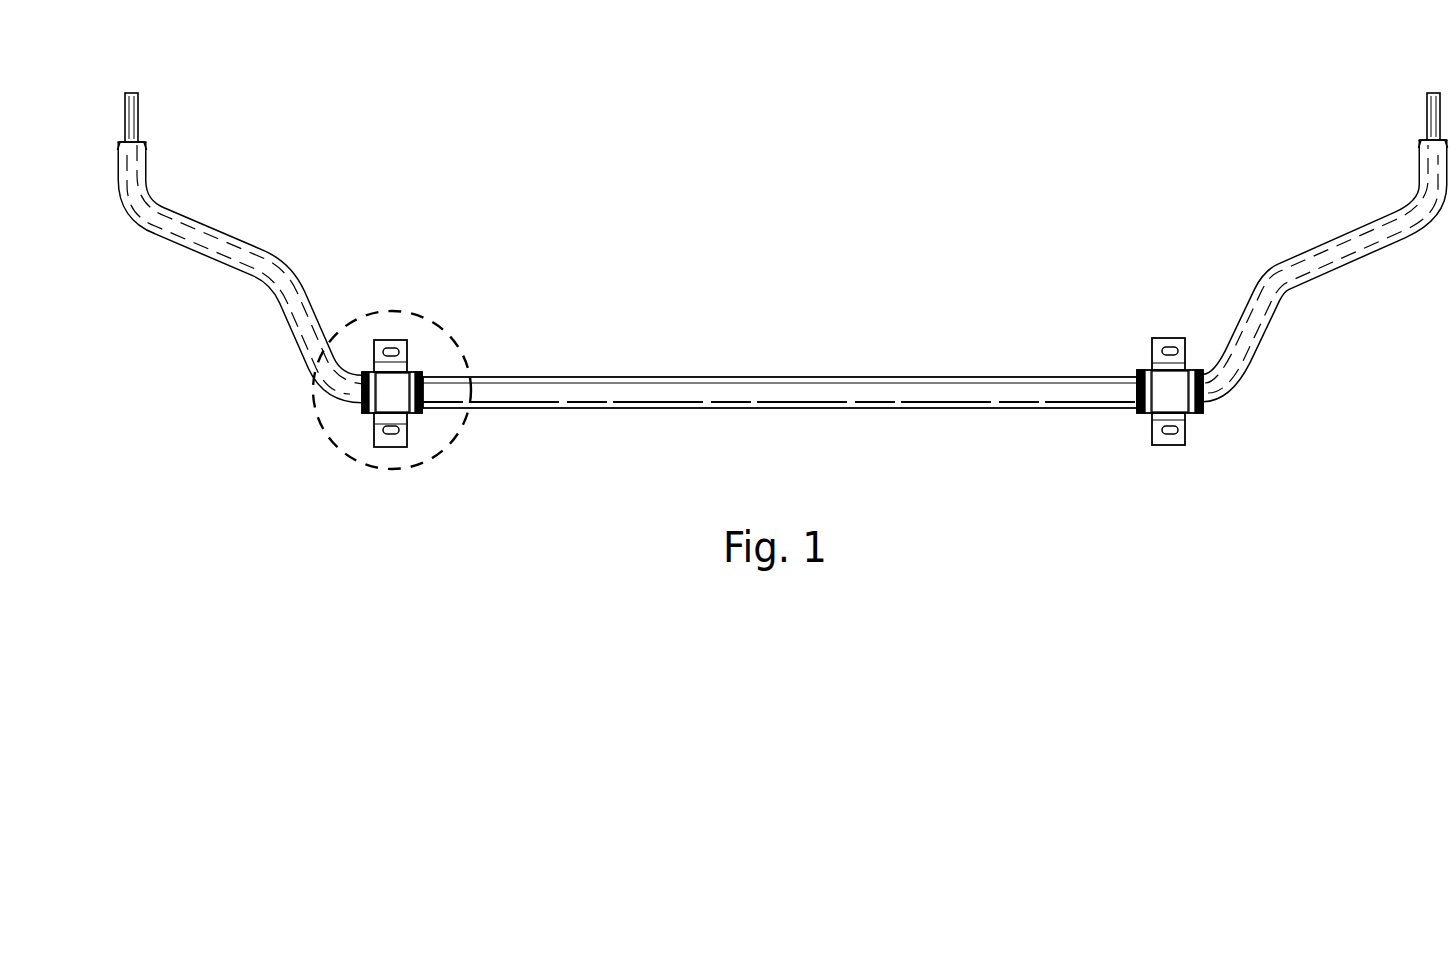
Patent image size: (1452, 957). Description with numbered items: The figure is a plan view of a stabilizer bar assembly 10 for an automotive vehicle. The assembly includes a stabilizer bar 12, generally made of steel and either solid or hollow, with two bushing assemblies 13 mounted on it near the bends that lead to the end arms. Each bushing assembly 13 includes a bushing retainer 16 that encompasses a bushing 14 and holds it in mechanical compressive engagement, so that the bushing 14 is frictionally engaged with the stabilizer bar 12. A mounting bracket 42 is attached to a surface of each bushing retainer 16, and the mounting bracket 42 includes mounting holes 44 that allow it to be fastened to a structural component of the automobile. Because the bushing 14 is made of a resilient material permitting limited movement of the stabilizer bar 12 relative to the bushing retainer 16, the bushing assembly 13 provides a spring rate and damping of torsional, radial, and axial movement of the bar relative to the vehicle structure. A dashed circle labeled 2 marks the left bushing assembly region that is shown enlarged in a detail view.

The stabilizer bar assembly 10 is at (783, 250).
The stabilizer bar 12 is at (795, 392).
The bushing assembly 13 is at (432, 431).
The bushing 14 is at (421, 377).
The bushing retainer 16 is at (387, 405).
The mounting bracket 42 is at (390, 340).
The mounting holes 44 is at (395, 348).
The detail region of FIG. 2 is at (320, 428).